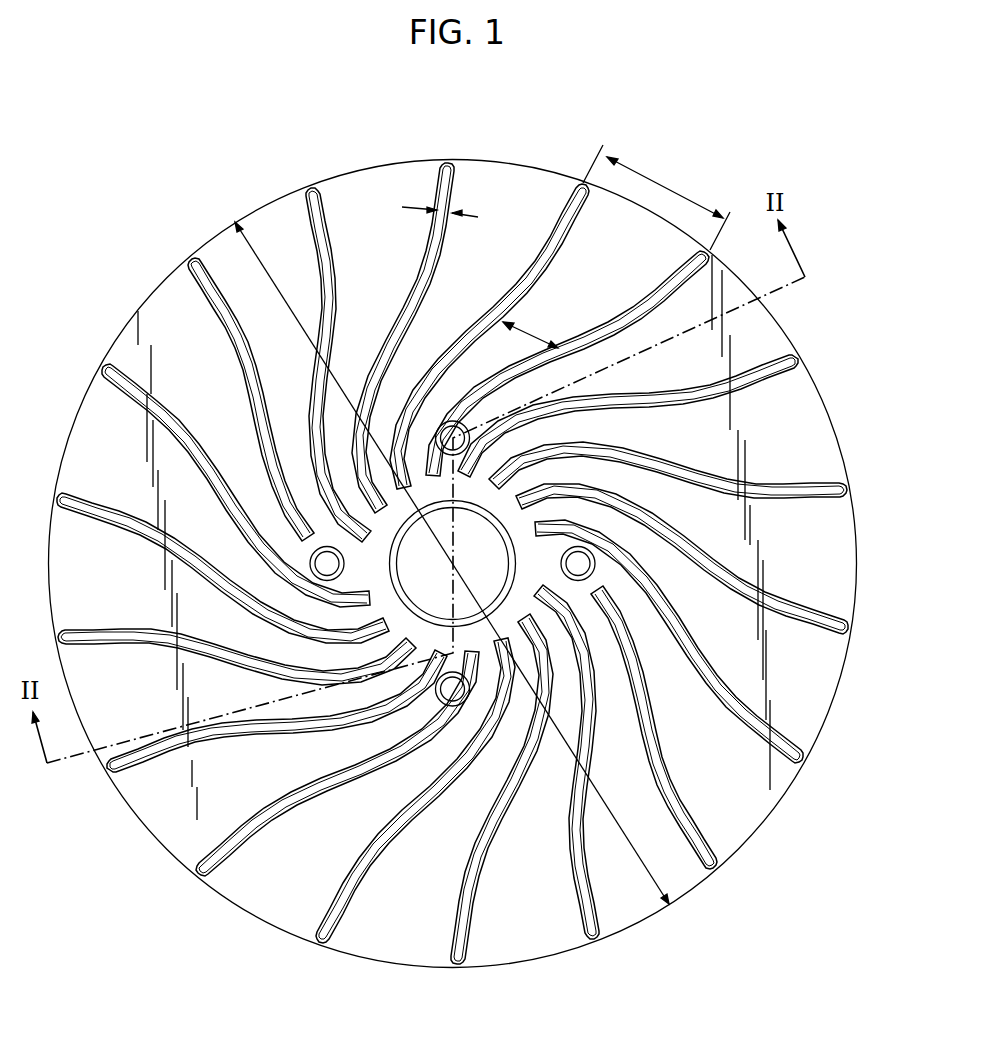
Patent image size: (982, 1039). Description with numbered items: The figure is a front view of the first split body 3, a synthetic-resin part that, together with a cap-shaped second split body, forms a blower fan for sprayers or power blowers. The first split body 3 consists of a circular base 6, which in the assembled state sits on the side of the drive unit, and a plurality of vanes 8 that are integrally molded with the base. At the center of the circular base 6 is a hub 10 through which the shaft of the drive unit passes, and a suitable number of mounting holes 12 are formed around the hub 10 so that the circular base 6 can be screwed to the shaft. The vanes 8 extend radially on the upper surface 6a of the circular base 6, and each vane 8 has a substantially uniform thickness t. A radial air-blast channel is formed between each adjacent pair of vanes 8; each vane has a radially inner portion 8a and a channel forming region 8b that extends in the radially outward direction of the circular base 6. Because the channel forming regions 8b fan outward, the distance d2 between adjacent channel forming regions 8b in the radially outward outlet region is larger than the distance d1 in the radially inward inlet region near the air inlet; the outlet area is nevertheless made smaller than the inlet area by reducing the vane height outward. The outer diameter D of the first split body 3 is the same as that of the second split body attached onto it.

The first split body 3 is at (245, 192).
The circular base 6 is at (510, 163).
The upper surface 6a is at (238, 263).
The vanes 8 is at (469, 563).
The inner portion of fin 8a is at (523, 423).
The channel forming region 8b is at (735, 398).
The hub 10 is at (389, 563).
The mounting holes 12 is at (463, 703).
The outer diameter D is at (452, 563).
The thickness t is at (440, 198).
The distance in the radially inward inlet region d1 is at (534, 324).
The distance in the radially outward outlet region d2 is at (656, 197).